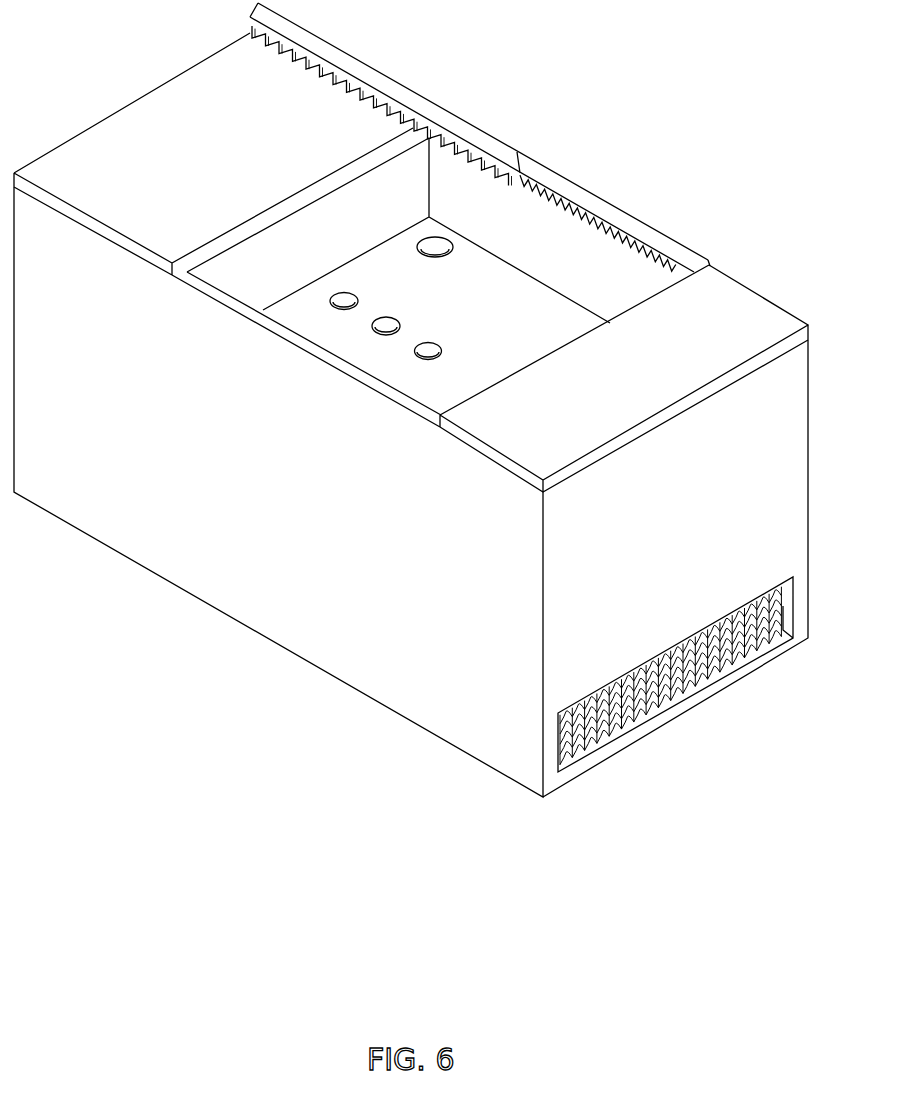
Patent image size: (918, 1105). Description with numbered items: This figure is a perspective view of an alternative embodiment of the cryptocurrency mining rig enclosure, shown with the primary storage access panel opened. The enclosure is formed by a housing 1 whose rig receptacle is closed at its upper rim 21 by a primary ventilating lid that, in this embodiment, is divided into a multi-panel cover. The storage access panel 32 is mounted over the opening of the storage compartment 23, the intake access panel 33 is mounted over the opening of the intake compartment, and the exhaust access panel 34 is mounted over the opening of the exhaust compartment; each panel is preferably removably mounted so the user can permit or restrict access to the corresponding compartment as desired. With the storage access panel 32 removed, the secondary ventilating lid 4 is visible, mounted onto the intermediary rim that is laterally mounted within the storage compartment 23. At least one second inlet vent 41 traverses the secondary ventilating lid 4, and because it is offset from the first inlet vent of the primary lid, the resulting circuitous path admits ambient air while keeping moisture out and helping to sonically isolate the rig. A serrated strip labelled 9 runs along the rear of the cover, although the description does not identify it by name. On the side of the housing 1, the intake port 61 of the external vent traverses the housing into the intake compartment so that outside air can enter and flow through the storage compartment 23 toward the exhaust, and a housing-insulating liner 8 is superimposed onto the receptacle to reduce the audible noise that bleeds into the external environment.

The housing 1 is at (802, 490).
The exhaust access panel 34 is at (125, 125).
The storage access panel 32 is at (497, 147).
The serrated strip 9 is at (356, 100).
The upper rim 21 is at (237, 305).
The secondary ventilating lid 4 is at (408, 230).
The second inlet vent 41 is at (436, 251).
The intake access panel 33 is at (743, 298).
The storage compartment 23 is at (548, 338).
The housing-insulating liner 8 is at (578, 735).
The intake port 61 is at (785, 600).